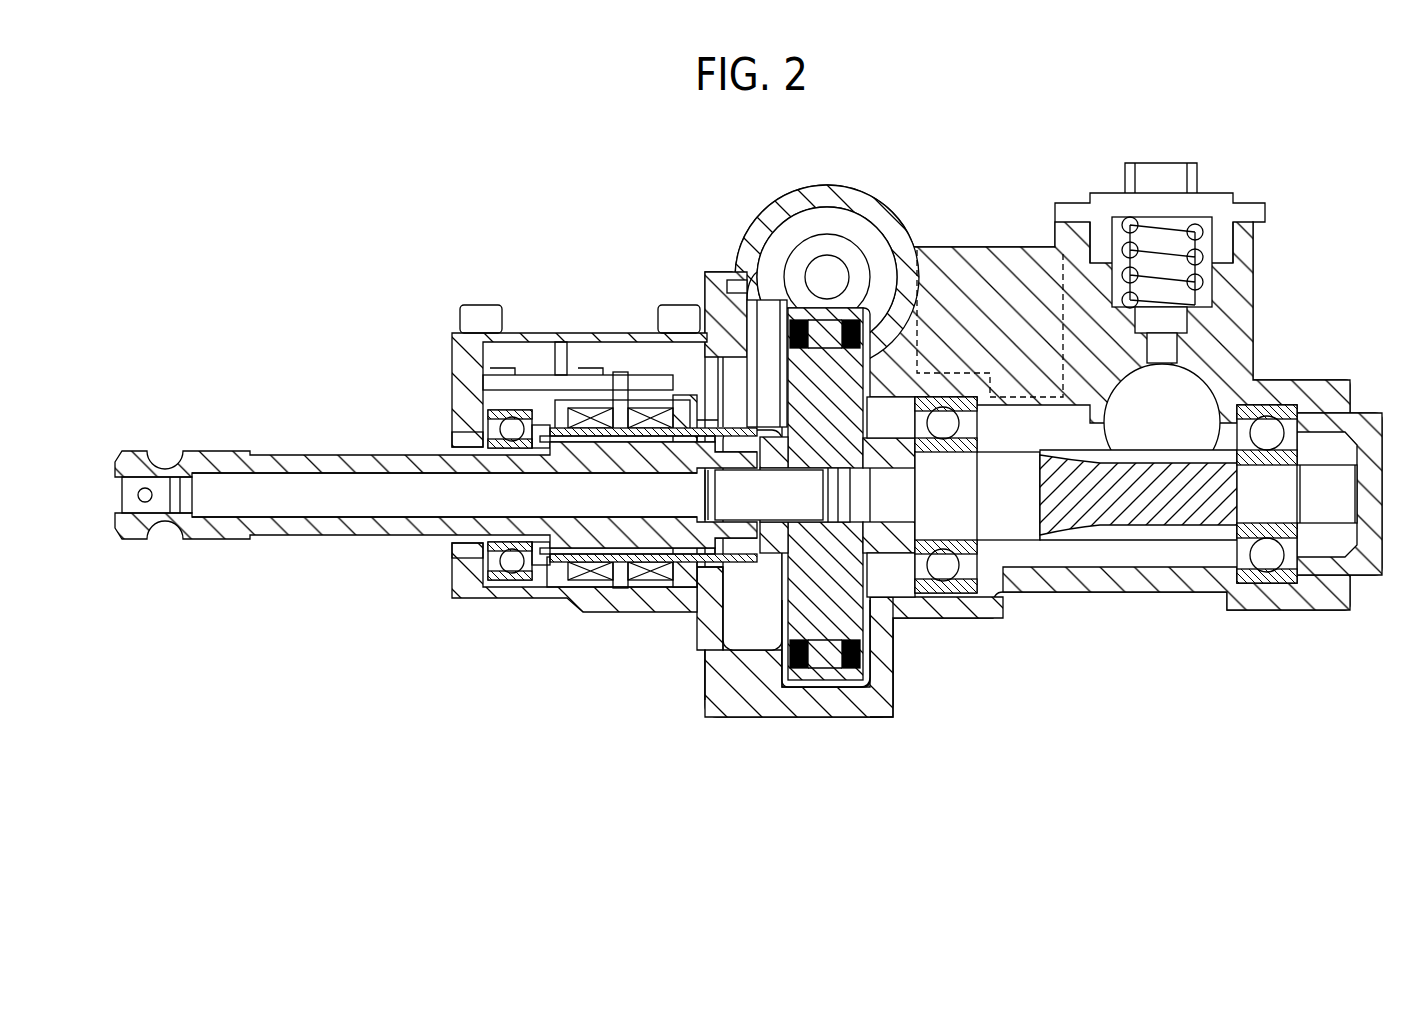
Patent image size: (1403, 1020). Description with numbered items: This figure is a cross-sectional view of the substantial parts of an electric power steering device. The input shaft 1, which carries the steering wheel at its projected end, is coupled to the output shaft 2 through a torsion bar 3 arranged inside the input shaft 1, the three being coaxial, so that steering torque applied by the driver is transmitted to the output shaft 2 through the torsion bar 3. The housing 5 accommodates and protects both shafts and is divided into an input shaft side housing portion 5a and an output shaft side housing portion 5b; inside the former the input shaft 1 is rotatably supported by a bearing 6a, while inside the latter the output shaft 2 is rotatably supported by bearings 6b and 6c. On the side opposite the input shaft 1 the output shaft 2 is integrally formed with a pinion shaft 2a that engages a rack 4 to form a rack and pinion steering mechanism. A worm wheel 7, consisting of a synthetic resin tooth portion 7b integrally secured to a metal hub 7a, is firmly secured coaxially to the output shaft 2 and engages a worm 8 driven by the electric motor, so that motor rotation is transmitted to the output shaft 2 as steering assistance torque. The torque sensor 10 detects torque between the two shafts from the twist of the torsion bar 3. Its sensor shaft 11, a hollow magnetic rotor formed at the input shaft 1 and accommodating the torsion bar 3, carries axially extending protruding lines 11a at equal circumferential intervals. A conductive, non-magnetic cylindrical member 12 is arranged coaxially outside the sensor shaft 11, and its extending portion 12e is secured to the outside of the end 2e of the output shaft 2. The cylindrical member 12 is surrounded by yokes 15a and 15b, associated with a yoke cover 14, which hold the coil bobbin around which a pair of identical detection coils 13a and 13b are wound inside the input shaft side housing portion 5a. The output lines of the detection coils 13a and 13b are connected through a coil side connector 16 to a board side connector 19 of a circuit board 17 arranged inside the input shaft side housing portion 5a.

The input shaft 1 is at (328, 462).
The output shaft 2 is at (907, 645).
The pinion shaft 2a is at (1122, 508).
The end of the output shaft 2e is at (765, 392).
The torsion bar 3 is at (328, 500).
The rack 4 is at (1172, 397).
The housing 5 is at (848, 183).
The input shaft side housing portion 5a is at (712, 700).
The output shaft side housing portion 5b is at (867, 707).
The bearing 6a is at (495, 578).
The bearing 6b is at (962, 587).
The bearing 6c is at (1262, 580).
The worm wheel 7 is at (750, 786).
The metal hub 7a is at (797, 610).
The tooth portion 7b is at (837, 663).
The worm 8 is at (826, 277).
The torque sensor 10 is at (622, 595).
The sensor shaft (rotor) 11 is at (603, 540).
The protruding lines 11a is at (553, 440).
The cylindrical member 12 is at (556, 418).
The extending portion 12e is at (748, 392).
The detection coil 13a is at (562, 578).
The detection coil 13b is at (643, 582).
The yoke cover 14 is at (620, 428).
The yoke 15a is at (551, 372).
The yoke 15b is at (672, 337).
The coil side connector 16 is at (640, 425).
The circuit board 17 is at (566, 392).
The board side connector 19 is at (622, 375).